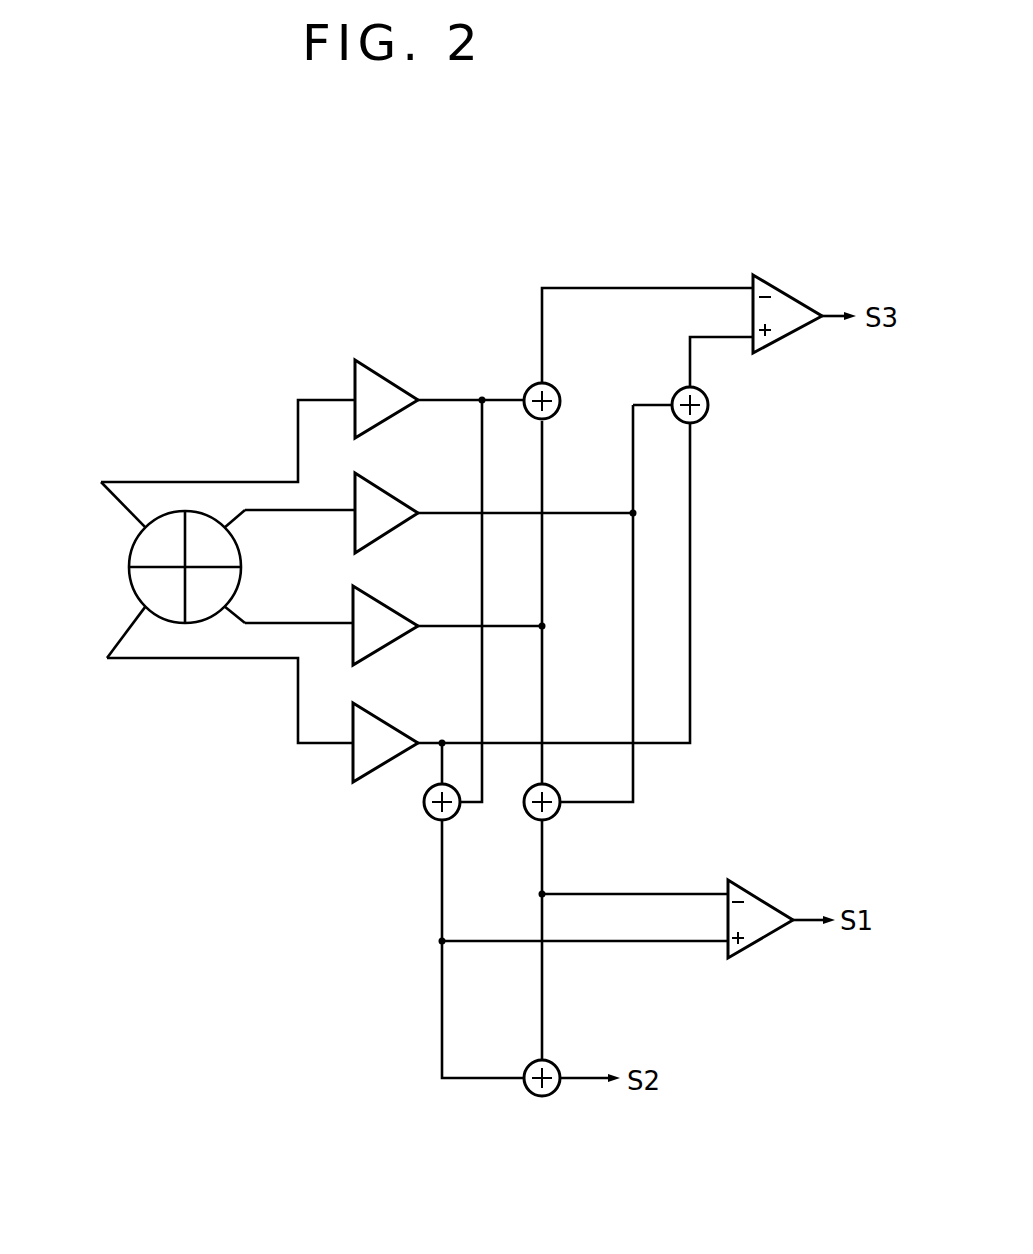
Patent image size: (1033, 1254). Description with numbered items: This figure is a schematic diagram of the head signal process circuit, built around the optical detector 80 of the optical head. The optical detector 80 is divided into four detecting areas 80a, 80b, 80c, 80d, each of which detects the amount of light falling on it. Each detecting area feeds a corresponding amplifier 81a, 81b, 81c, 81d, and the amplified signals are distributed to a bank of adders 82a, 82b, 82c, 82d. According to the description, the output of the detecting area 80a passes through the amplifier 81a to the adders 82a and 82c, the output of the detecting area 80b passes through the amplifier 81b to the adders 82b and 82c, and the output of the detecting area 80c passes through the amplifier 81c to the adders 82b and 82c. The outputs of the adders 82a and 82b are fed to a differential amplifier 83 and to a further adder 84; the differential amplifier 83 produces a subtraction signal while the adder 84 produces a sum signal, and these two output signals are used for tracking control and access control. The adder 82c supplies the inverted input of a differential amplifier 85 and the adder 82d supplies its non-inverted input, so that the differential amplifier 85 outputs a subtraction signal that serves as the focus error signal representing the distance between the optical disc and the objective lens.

The optical detector 80 is at (180, 546).
The detecting area 80a is at (147, 545).
The detecting area 80b is at (228, 547).
The detecting area 80c is at (222, 595).
The detecting area 80d is at (142, 585).
The amplifier 81a is at (385, 380).
The amplifier 81b is at (408, 508).
The amplifier 81c is at (408, 620).
The amplifier 81d is at (408, 740).
The adder 82a is at (425, 800).
The adder 82b is at (555, 820).
The adder 82c is at (562, 390).
The adder 82d is at (708, 412).
The differential amplifier 83 is at (770, 900).
The adder 84 is at (541, 1097).
The differential amplifier 85 is at (800, 297).